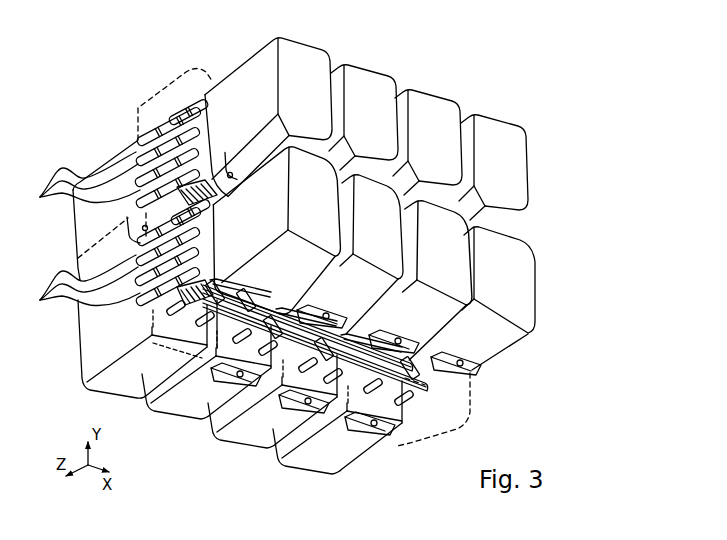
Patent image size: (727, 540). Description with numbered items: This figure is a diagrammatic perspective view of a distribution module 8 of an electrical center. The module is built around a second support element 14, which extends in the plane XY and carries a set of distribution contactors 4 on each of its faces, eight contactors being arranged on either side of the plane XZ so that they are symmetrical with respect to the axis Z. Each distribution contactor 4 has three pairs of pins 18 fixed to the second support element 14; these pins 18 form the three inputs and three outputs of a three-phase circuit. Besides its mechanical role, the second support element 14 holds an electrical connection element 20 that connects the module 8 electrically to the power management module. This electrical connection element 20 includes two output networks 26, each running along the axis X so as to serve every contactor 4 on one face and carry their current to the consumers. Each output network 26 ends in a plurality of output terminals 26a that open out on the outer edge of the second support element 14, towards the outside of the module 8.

The distribution contactor 4 is at (304, 56).
The distribution module 8 is at (542, 152).
The second support element 14 is at (170, 82).
The pins 18 is at (325, 352).
The electrical connection element 20 is at (285, 348).
The output network 26 is at (117, 118).
The output terminal 26a is at (78, 237).